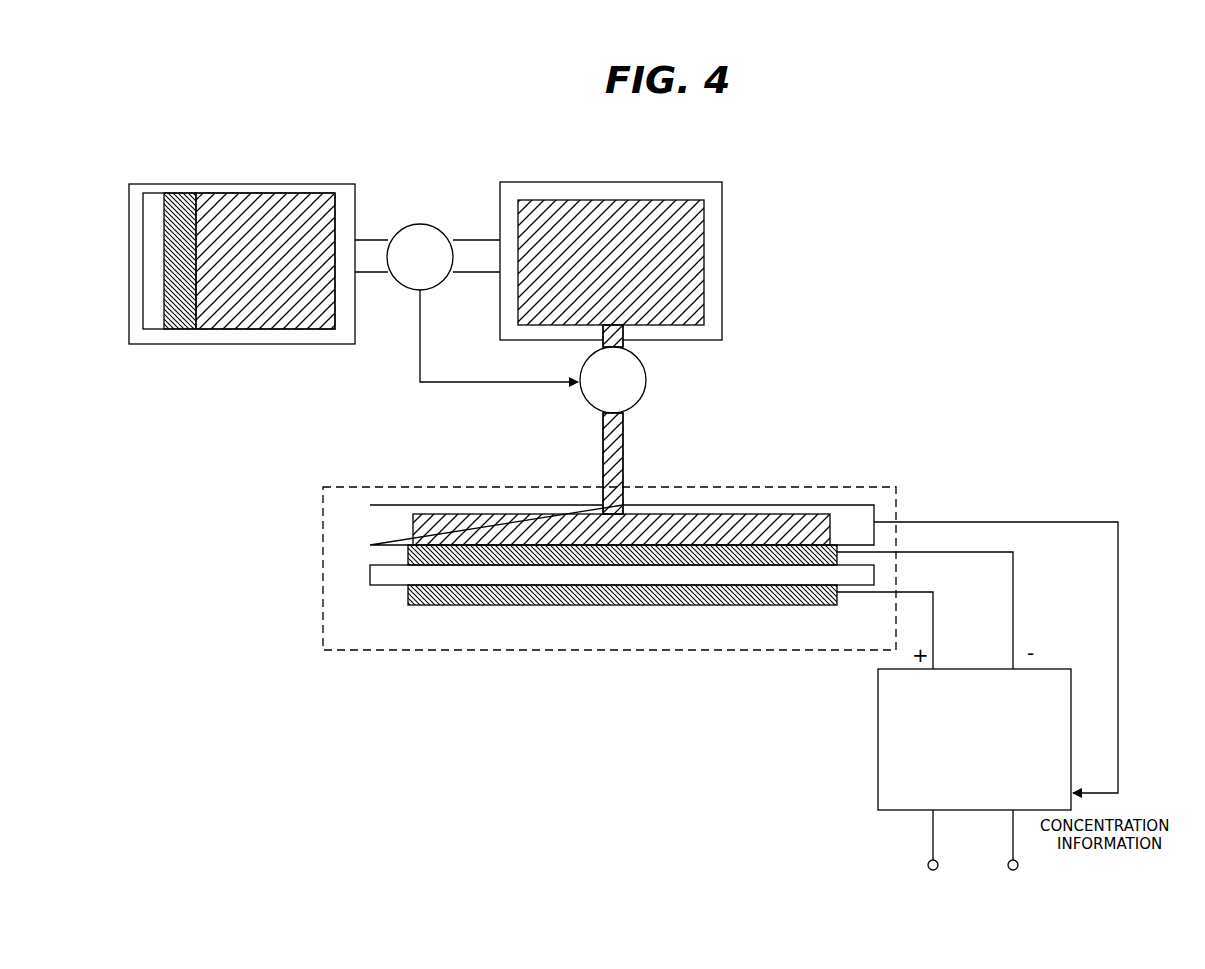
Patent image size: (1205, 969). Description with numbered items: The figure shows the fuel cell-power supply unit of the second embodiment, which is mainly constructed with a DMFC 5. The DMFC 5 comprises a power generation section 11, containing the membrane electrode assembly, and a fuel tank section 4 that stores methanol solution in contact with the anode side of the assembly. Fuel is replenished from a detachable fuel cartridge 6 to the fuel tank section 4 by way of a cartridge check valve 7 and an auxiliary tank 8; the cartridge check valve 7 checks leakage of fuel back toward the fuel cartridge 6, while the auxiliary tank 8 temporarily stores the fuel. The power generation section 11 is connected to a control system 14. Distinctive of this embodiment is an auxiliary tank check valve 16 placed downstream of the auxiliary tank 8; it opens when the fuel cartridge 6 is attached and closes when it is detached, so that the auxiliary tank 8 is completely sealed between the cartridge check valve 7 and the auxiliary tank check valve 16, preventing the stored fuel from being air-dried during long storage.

The fuel tank section 4 is at (370, 521).
The DMFC 5 is at (849, 487).
The fuel cartridge 6 is at (303, 184).
The cartridge check valve 7 is at (421, 228).
The auxiliary tank 8 is at (672, 182).
The power generation section 11 is at (366, 547).
The control system 14 is at (882, 737).
The auxiliary tank check valve 16 is at (640, 394).